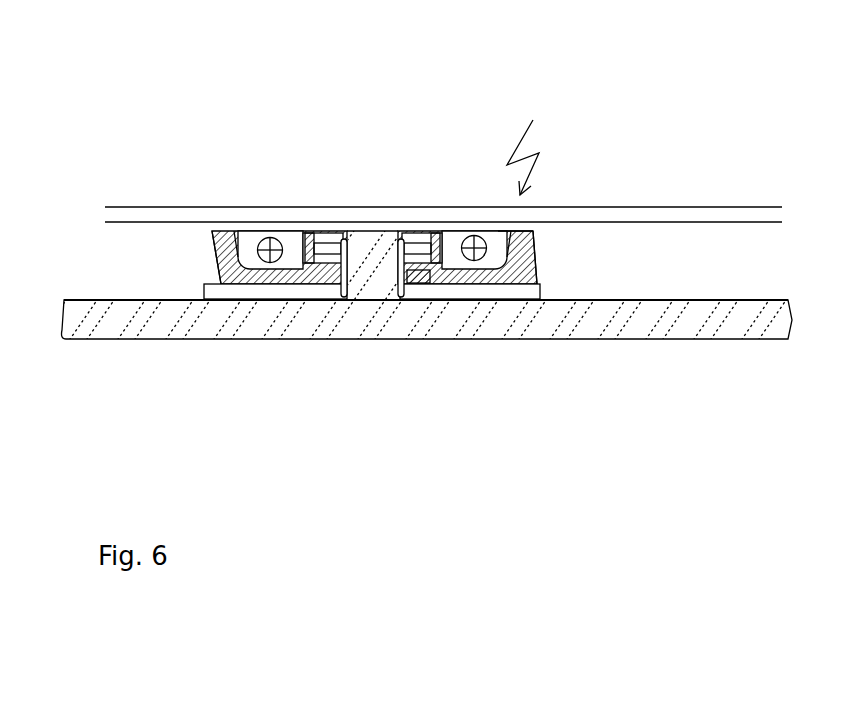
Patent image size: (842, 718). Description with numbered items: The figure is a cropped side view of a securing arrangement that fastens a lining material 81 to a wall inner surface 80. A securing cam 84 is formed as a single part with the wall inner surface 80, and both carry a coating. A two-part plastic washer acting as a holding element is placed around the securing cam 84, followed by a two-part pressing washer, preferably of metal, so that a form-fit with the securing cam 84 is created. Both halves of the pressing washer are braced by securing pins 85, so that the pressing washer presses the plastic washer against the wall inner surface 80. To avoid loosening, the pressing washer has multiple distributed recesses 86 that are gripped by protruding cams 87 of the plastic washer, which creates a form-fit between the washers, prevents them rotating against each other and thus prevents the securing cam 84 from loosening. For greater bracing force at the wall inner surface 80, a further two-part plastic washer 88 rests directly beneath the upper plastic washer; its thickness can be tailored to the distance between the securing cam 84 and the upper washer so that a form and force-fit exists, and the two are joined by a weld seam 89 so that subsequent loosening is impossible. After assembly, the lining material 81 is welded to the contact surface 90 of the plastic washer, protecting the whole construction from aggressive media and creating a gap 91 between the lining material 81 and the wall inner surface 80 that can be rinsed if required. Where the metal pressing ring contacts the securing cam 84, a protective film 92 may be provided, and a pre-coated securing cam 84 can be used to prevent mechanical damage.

The wall inner surface 80 is at (553, 315).
The lining material 81 is at (650, 212).
The securing cam 84 is at (373, 327).
The securing pin 85 is at (483, 240).
The recess 86 is at (316, 262).
The protruding cam 87 is at (430, 262).
The plastic washer 88 is at (217, 283).
The weld seam 89 is at (528, 275).
The contact surface 90 is at (520, 237).
The gap 91 is at (128, 262).
The protective film 92 is at (424, 240).